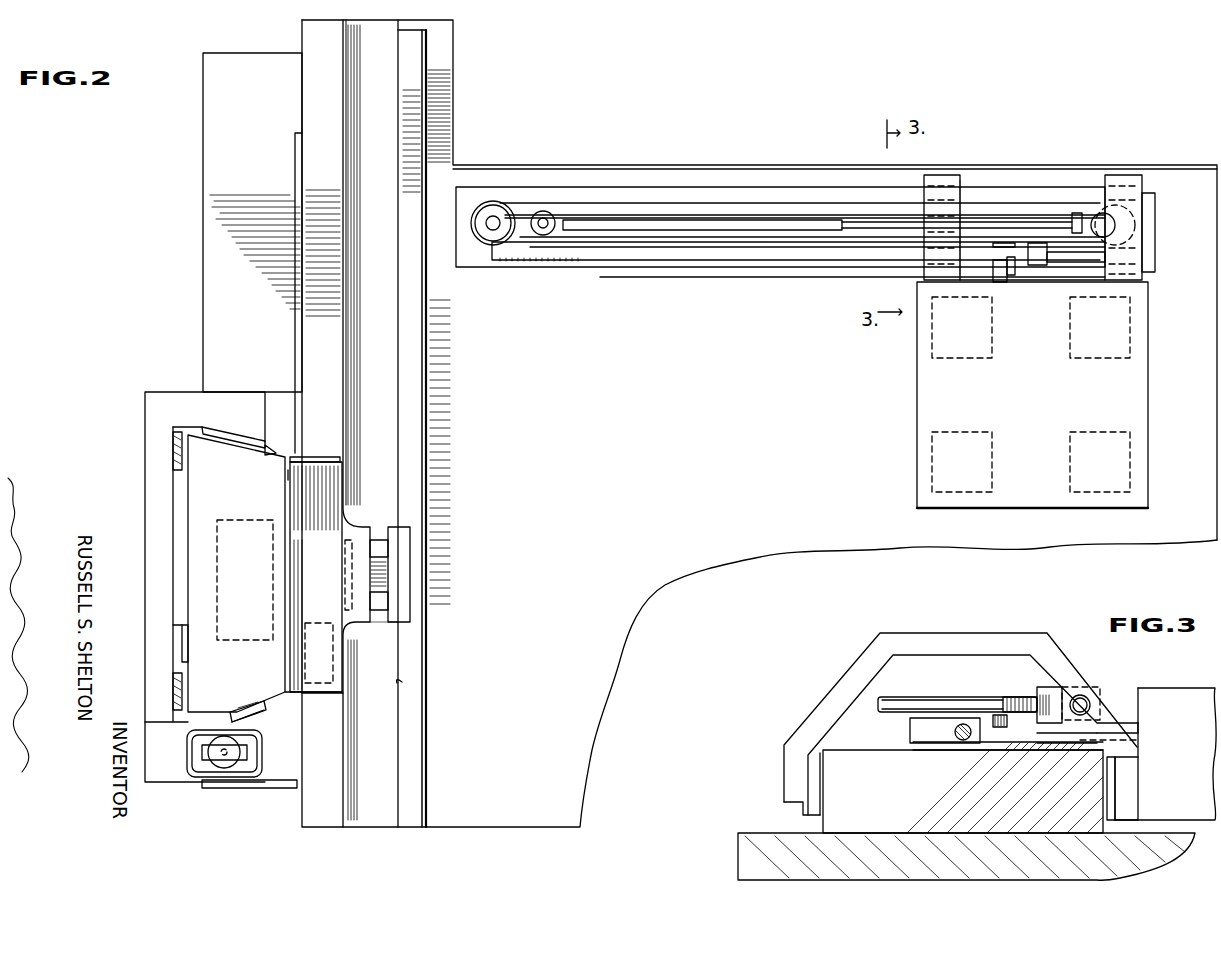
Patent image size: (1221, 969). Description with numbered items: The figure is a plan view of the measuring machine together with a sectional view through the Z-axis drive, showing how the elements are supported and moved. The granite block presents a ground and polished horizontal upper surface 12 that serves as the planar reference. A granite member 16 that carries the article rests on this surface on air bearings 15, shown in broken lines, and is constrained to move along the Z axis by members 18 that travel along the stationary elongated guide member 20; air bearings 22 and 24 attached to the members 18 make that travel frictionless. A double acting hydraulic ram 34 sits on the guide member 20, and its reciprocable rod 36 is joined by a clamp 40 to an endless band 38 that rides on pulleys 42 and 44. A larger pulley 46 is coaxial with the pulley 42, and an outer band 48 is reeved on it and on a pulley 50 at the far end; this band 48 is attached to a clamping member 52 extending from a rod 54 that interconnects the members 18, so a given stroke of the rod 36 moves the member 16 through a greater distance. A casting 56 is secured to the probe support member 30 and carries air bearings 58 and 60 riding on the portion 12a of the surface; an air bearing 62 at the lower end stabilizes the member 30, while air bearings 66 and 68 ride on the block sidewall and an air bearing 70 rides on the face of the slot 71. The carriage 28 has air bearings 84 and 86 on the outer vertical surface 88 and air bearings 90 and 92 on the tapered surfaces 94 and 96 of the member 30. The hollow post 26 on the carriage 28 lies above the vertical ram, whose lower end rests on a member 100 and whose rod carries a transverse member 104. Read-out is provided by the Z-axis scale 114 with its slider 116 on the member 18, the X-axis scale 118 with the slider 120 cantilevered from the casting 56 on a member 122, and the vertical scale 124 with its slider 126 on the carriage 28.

In FIG. 2, the horizontal upper surface 12 is at (731, 465).
In FIG. 3, the horizontal upper surface 12 is at (752, 833).
In FIG. 2, the portion of the work support surface 12a is at (305, 755).
In FIG. 2, the air bearings 15 is at (1070, 350).
In FIG. 2, the granite member 16 is at (1125, 389).
In FIG. 3, the granite member 16 is at (1182, 688).
In FIG. 2, the members 18 is at (960, 185).
In FIG. 3, the members 18 is at (992, 636).
In FIG. 2, the guide member 20 is at (478, 265).
In FIG. 3, the guide member 20 is at (865, 762).
In FIG. 2, the air bearings 22 is at (934, 175).
In FIG. 3, the air bearings 22 is at (803, 812).
In FIG. 2, the air bearings 24 is at (895, 287).
In FIG. 3, the air bearings 24 is at (1120, 805).
In FIG. 2, the hollow post 26 is at (186, 740).
In FIG. 2, the carriage 28 is at (148, 500).
In FIG. 2, the probe support member 30 is at (206, 681).
In FIG. 2, the double acting hydraulic ram 34 is at (726, 220).
In FIG. 2, the reciprocable rod 36 is at (878, 220).
In FIG. 3, the reciprocable rod 36 is at (963, 724).
In FIG. 2, the endless band 38 is at (646, 214).
In FIG. 3, the endless band 38 is at (1007, 725).
In FIG. 2, the clamp 40 is at (1076, 213).
In FIG. 3, the clamp 40 is at (910, 736).
In FIG. 2, the pulley 42 is at (1156, 228).
In FIG. 3, the pulley 42 is at (990, 720).
In FIG. 2, the pulley 44 is at (541, 212).
In FIG. 2, the larger pulley 46 is at (1136, 212).
In FIG. 3, the larger pulley 46 is at (932, 699).
In FIG. 2, the band 48 is at (600, 205).
In FIG. 3, the band 48 is at (881, 703).
In FIG. 2, the pulley 50 is at (494, 204).
In FIG. 2, the clamping member 52 is at (1037, 265).
In FIG. 3, the clamping member 52 is at (1042, 690).
In FIG. 2, the rod 54 is at (1088, 262).
In FIG. 3, the rod 54 is at (1082, 697).
In FIG. 2, the casting 56 is at (307, 564).
In FIG. 2, the air bearing 58 is at (323, 458).
In FIG. 2, the air bearing 60 is at (330, 670).
In FIG. 2, the air bearing 62 is at (228, 625).
In FIG. 2, the air bearing 66 is at (288, 490).
In FIG. 2, the air bearing 68 is at (298, 633).
In FIG. 2, the air bearing 70 is at (345, 603).
In FIG. 2, the slot 71 is at (398, 684).
In FIG. 2, the air bearing 84 is at (172, 458).
In FIG. 2, the air bearing 86 is at (172, 695).
In FIG. 2, the outer vertical surface 88 is at (188, 537).
In FIG. 2, the air bearing 90 is at (258, 440).
In FIG. 2, the air bearing 92 is at (264, 712).
In FIG. 2, the tapered surface 94 is at (266, 449).
In FIG. 2, the tapered surface 96 is at (265, 703).
In FIG. 2, the member 100 is at (236, 715).
In FIG. 2, the transverse member 104 is at (212, 762).
In FIG. 2, the scale 114 is at (610, 262).
In FIG. 3, the scale 114 is at (1078, 752).
In FIG. 2, the slider 116 is at (1000, 270).
In FIG. 3, the slider 116 is at (1133, 730).
In FIG. 2, the scale 118 is at (413, 273).
In FIG. 2, the slider 120 is at (400, 543).
In FIG. 2, the member 122 is at (372, 574).
In FIG. 2, the scale 124 is at (188, 655).
In FIG. 2, the slider 126 is at (172, 638).